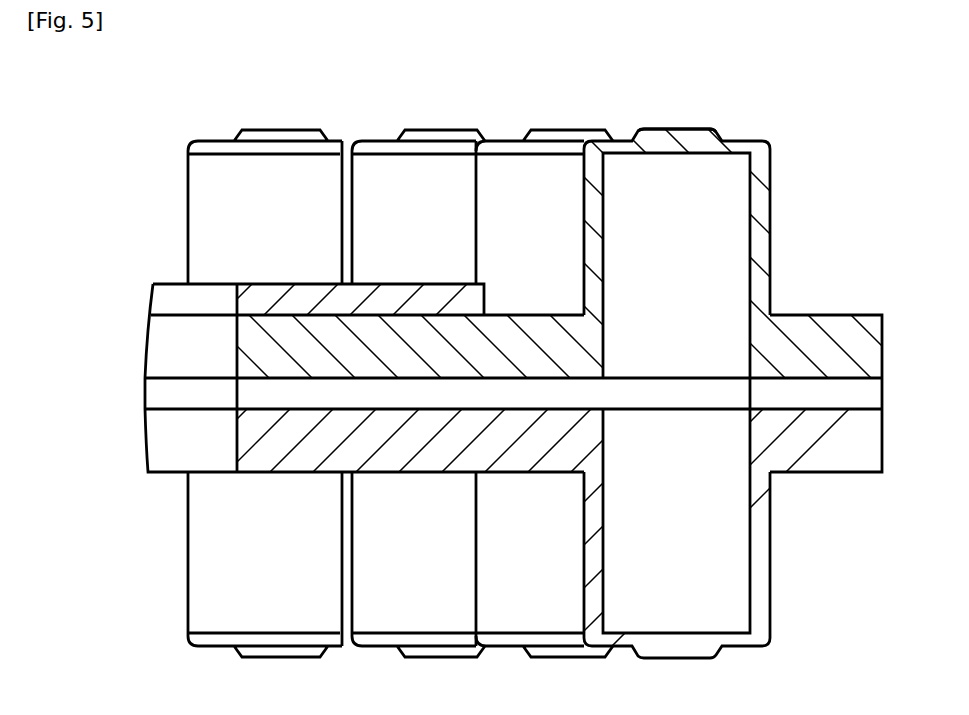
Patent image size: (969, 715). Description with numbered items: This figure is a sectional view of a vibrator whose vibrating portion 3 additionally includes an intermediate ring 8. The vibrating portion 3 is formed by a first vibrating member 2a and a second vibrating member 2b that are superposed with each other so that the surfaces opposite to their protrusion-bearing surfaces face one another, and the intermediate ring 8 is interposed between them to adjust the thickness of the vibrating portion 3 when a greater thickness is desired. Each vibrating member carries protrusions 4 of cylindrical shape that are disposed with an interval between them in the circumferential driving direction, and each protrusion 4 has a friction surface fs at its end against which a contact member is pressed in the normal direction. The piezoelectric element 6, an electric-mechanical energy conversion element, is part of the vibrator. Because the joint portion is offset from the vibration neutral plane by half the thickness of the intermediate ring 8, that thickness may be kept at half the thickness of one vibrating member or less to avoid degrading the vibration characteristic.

The friction surface fs is at (692, 125).
The protrusion 4 is at (763, 182).
The piezoelectric element 6 is at (243, 290).
The intermediate ring 8 is at (782, 392).
The first vibrating member 2a is at (822, 363).
The second vibrating member 2b is at (866, 425).
The vibrating portion 3 is at (907, 543).